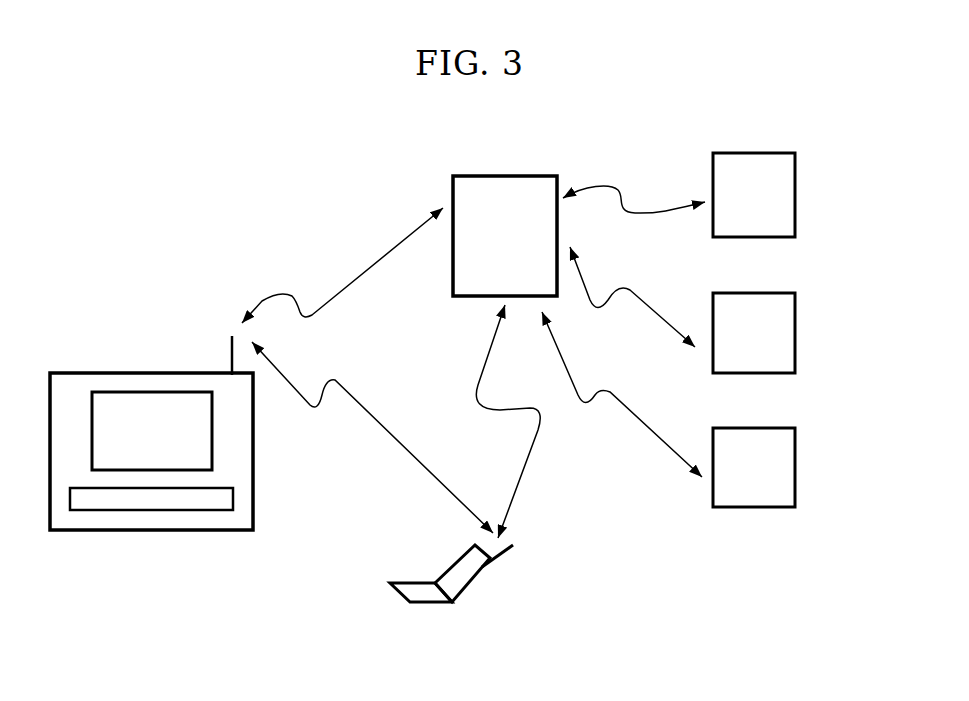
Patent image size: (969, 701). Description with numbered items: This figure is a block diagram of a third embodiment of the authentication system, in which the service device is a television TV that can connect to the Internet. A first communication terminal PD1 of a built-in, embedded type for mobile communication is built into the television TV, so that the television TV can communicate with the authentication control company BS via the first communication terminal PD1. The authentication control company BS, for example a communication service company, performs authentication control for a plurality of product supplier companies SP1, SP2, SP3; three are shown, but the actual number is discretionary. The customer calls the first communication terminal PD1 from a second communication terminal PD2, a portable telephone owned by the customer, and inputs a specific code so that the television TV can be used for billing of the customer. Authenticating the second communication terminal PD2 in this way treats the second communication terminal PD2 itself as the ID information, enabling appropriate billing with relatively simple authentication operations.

The television TV is at (150, 373).
The first communication terminal PD1 is at (243, 430).
The second communication terminal PD2 is at (480, 580).
The authentication control company BS is at (477, 176).
The product supplier company SP1 is at (797, 177).
The product supplier company SP2 is at (797, 320).
The product supplier company SP3 is at (797, 457).